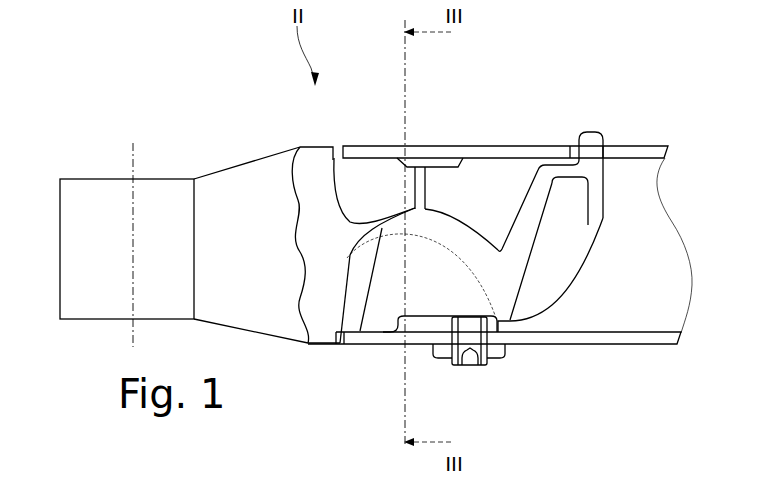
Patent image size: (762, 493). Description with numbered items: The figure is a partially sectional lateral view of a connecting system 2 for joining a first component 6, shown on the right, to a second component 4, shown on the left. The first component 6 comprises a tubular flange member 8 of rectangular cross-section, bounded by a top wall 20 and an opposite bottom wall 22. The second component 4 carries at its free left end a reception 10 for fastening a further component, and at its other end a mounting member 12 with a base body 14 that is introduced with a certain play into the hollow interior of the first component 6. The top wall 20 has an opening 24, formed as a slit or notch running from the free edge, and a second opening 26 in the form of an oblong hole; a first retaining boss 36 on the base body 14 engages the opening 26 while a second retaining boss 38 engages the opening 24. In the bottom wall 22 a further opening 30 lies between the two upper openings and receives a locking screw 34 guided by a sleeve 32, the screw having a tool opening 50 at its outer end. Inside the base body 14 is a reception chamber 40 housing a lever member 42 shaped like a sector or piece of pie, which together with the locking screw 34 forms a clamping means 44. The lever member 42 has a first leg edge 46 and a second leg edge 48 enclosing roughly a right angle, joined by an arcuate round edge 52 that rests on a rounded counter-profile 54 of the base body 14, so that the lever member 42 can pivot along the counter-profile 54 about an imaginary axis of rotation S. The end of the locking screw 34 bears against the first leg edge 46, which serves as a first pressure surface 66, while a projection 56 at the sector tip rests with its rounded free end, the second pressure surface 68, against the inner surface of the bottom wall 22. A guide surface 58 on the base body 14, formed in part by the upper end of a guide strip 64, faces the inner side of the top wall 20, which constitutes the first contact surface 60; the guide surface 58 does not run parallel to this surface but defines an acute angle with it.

The connecting system 2 is at (441, 103).
The second component 4 is at (99, 121).
The first component 6 is at (644, 102).
The tubular flange member 8 is at (684, 256).
The reception 10 is at (89, 259).
The mounting member 12 is at (511, 103).
The base body 14 is at (565, 285).
The top wall 20 is at (666, 153).
The bottom wall 22 is at (656, 350).
The opening 24 is at (338, 158).
The opening 26 is at (583, 132).
The further opening 30 is at (500, 344).
The sleeve 32 is at (506, 358).
The locking screw 34 is at (498, 357).
The first retaining boss 36 is at (594, 131).
The second retaining boss 38 is at (310, 160).
The reception chamber 40 is at (436, 240).
The lever member 42 is at (376, 286).
The clamping means 44 is at (328, 386).
The first leg edge 46 is at (435, 348).
The second leg edge 48 is at (347, 258).
The tool opening 50 is at (465, 367).
The round edge 52 is at (475, 236).
The counter-profile 54 is at (389, 230).
The projection 56 is at (372, 335).
The guide surface 58 is at (442, 160).
The first contact surface 60 is at (631, 159).
The guide strip 64 is at (412, 160).
The first pressure surface 66 is at (410, 318).
The second pressure surface 68 is at (352, 347).
The axis of rotation S is at (395, 302).